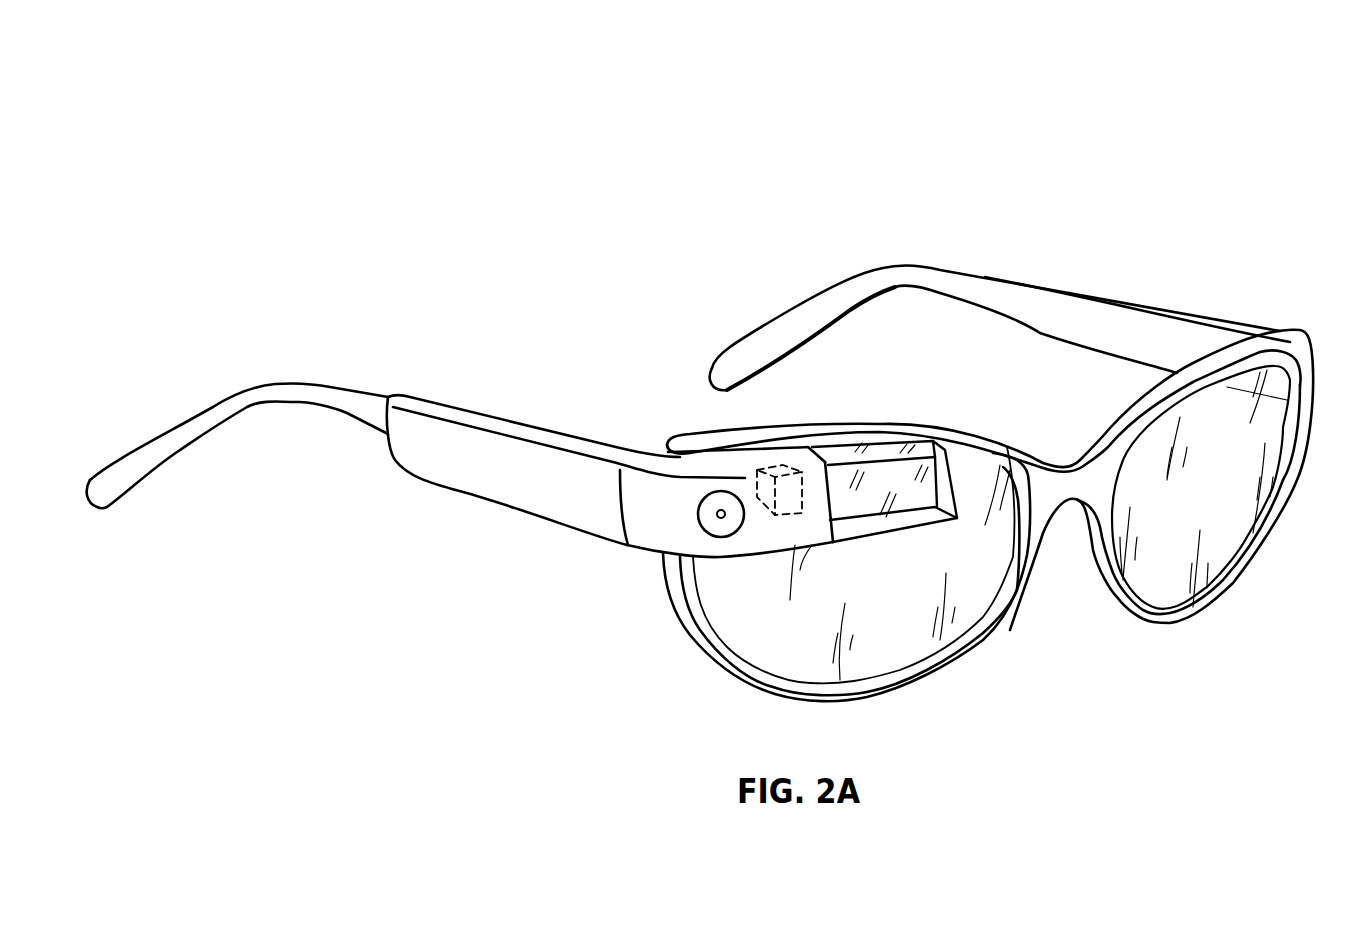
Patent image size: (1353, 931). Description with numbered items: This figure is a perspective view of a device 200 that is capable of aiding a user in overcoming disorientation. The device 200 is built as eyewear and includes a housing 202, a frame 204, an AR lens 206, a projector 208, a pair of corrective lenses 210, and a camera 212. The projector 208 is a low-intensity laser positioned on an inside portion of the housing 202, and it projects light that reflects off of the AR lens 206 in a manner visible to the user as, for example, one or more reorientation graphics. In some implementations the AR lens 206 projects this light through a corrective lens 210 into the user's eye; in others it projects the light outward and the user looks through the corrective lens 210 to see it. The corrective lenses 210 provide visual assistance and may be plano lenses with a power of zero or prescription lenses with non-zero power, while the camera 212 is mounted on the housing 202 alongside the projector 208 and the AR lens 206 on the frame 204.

The device 200 is at (338, 110).
The housing 202 is at (525, 472).
The frame 204 is at (1173, 330).
The AR lens 206 is at (924, 450).
The projector 208 is at (826, 462).
The corrective lenses 210 is at (843, 663).
The camera 212 is at (713, 513).